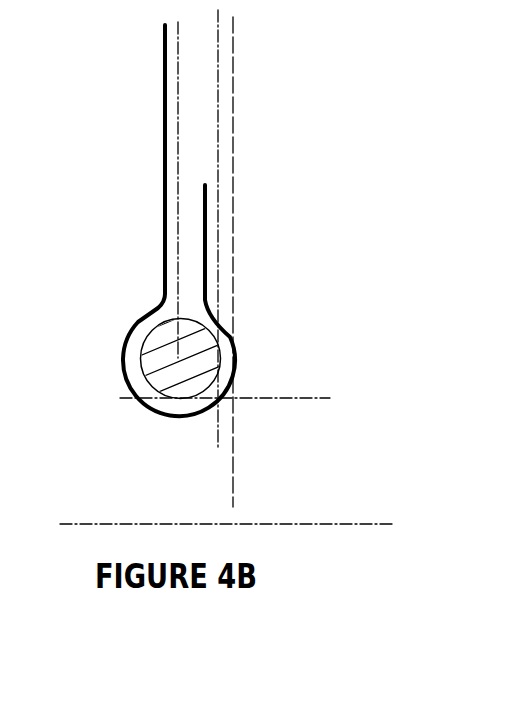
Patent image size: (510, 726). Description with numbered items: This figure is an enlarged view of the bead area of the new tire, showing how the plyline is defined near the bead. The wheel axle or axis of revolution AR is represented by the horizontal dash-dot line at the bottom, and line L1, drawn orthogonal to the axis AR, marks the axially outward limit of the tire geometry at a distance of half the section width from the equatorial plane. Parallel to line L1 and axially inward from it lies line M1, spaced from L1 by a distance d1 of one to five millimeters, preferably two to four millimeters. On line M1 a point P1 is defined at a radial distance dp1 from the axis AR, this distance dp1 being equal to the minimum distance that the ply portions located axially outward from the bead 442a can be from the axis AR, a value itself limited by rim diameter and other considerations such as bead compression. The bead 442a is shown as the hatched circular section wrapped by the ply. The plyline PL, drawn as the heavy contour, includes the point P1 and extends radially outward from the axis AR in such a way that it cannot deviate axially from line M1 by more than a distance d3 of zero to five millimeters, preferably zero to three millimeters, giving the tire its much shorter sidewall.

The plyline PL is at (165, 212).
The bead 442a is at (175, 350).
The line M1 is at (218, 48).
The line L1 is at (233, 88).
The distance d3 is at (128, 132).
The distance d1 is at (178, 152).
The point P1 is at (222, 398).
The radial distance dp1 is at (303, 482).
The wheel axle / axis of revolution AR is at (362, 524).